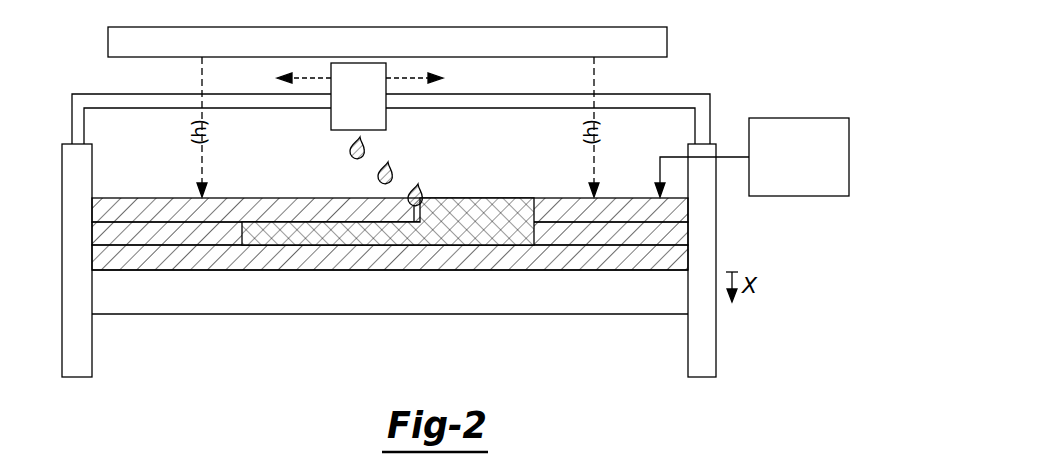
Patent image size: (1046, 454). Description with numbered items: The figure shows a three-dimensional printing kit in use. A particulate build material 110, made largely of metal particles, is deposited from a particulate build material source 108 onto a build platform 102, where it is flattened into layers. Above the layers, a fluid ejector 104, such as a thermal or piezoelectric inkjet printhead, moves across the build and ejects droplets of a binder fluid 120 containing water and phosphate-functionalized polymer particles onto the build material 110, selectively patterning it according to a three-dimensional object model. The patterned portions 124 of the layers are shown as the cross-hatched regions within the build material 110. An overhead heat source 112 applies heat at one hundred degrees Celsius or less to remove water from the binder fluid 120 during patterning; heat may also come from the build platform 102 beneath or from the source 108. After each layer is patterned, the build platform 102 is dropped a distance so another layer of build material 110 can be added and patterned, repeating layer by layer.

The build platform 102 is at (549, 293).
The fluid ejector 104 is at (369, 108).
The particulate build material source 108 is at (810, 165).
The particulate build material 110 is at (137, 233).
The heat source 112 is at (407, 54).
The binder fluid 120 is at (350, 149).
The patterned portions 124 is at (480, 196).